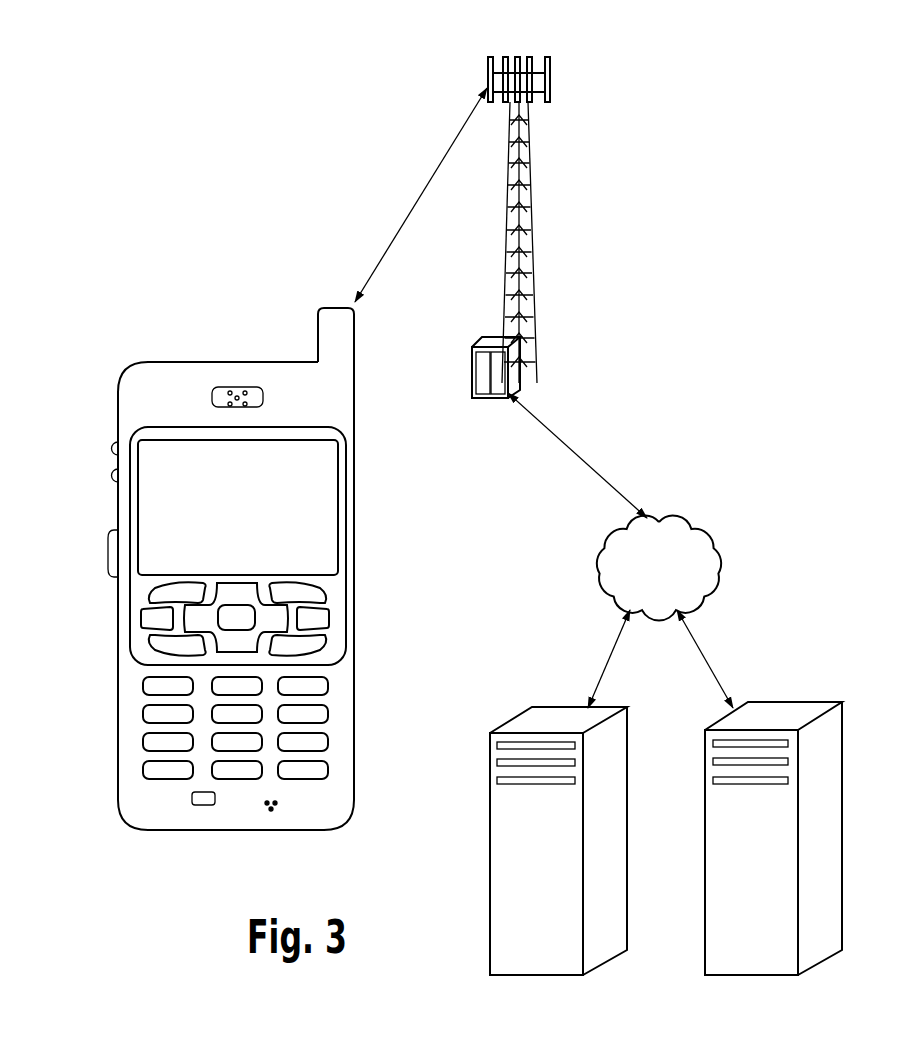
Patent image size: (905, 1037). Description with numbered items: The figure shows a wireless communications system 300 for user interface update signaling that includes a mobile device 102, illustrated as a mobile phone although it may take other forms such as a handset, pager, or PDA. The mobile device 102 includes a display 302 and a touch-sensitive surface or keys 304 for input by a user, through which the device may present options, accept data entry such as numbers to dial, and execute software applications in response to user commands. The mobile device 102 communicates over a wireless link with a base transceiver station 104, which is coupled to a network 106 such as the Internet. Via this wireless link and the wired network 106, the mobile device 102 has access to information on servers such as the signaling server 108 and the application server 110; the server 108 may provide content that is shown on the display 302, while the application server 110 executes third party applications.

The wireless communications system 300 is at (344, 80).
The mobile device 102 is at (150, 831).
The display 302 is at (333, 488).
The touch-sensitive surface or keys 304 is at (112, 585).
The base transceiver station 104 is at (500, 243).
The network 106 is at (617, 597).
The signaling server 108 is at (490, 812).
The application server 110 is at (705, 800).